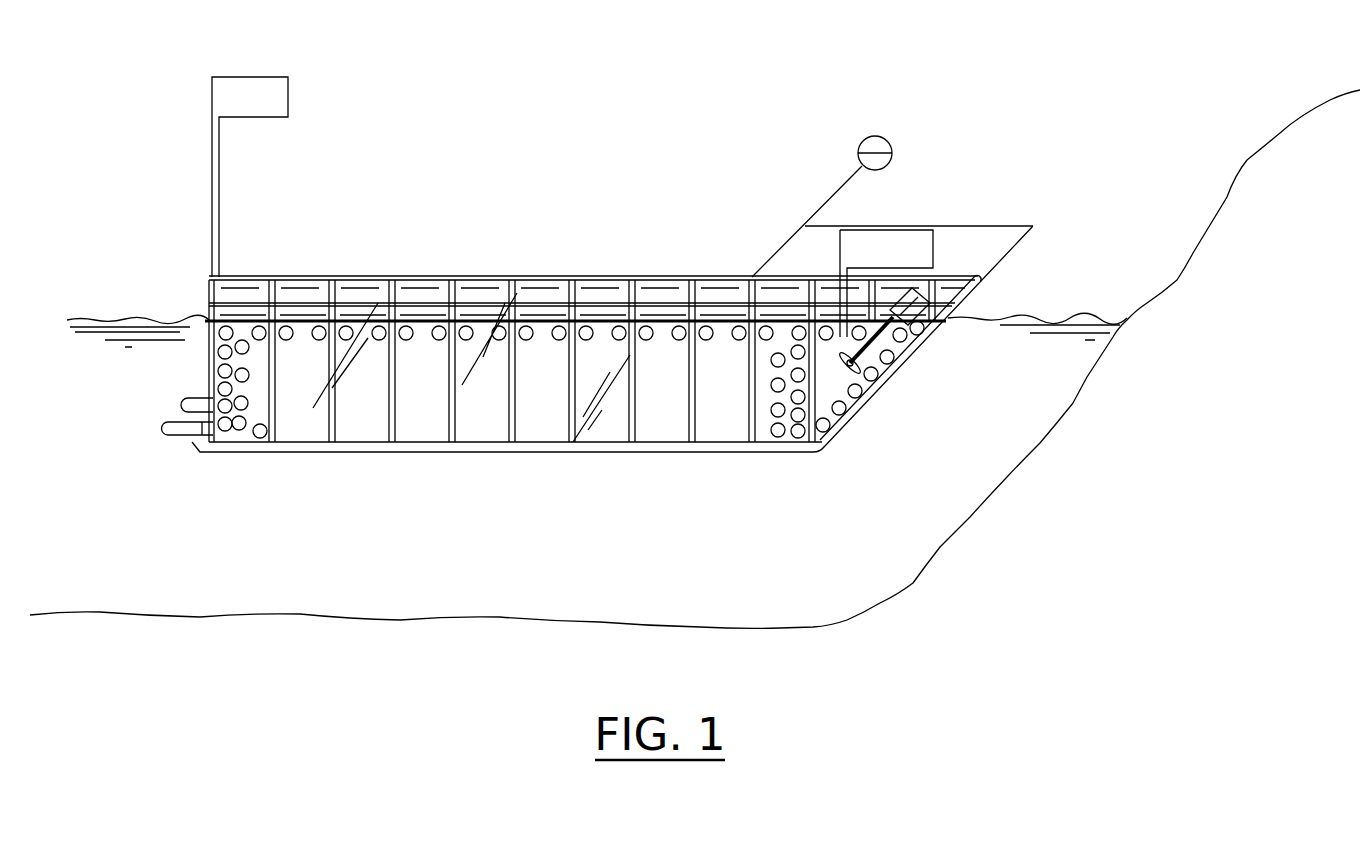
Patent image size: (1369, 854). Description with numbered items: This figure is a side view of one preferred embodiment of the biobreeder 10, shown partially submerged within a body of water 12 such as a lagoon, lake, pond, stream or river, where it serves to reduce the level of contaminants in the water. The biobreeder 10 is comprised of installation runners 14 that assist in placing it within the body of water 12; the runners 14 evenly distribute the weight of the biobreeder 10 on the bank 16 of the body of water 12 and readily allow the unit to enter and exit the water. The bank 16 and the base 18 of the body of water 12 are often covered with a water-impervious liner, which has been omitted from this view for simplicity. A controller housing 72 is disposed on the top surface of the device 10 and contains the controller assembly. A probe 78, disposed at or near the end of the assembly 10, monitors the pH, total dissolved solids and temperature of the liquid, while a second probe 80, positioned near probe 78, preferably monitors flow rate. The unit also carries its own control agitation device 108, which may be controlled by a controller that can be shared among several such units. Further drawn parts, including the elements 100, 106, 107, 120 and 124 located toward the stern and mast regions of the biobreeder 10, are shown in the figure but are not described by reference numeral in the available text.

The biobreeder 10 is at (605, 84).
The body of water 12 is at (1040, 352).
The installation runners 14 is at (205, 455).
The bank 16 is at (1230, 192).
The base 18 is at (568, 620).
The controller housing 72 is at (899, 240).
The probe 78 is at (162, 426).
The probe 80 is at (188, 400).
The motor 100 is at (940, 300).
The propeller 106 is at (863, 368).
The float 107 is at (565, 330).
The control agitation device 108 is at (938, 326).
The flag 120 is at (250, 82).
The buoy 124 is at (888, 142).